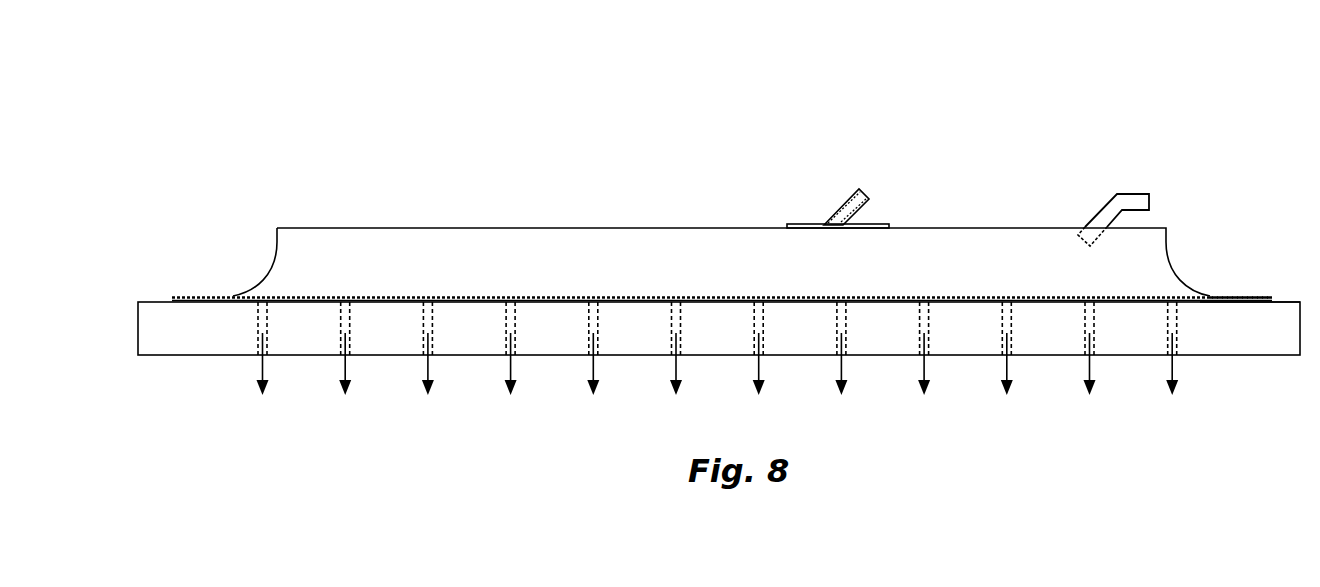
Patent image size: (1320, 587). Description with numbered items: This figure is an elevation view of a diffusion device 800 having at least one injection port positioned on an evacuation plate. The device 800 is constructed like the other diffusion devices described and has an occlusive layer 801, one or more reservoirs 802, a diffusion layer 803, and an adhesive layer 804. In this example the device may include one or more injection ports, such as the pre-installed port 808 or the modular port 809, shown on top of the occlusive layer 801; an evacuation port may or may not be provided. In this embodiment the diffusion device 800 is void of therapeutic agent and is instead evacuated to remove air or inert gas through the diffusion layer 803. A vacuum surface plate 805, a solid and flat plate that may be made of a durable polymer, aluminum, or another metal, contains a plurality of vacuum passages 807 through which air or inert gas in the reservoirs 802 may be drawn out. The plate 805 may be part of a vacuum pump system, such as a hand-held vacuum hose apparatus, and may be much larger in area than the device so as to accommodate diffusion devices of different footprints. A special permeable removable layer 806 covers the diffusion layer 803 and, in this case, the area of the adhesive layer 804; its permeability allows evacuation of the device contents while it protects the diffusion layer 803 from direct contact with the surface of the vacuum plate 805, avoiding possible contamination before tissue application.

The diffusion device 800 is at (662, 62).
The occlusive layer 801 is at (403, 228).
The reservoirs 802 is at (599, 250).
The diffusion layer 803 is at (527, 296).
The adhesive layer 804 is at (1227, 297).
The vacuum surface plate 805 is at (236, 358).
The permeable removable layer 806 is at (1213, 301).
The vacuum passages 807 is at (668, 356).
The pre-installed port 808 is at (1095, 215).
The modular port 809 is at (835, 212).